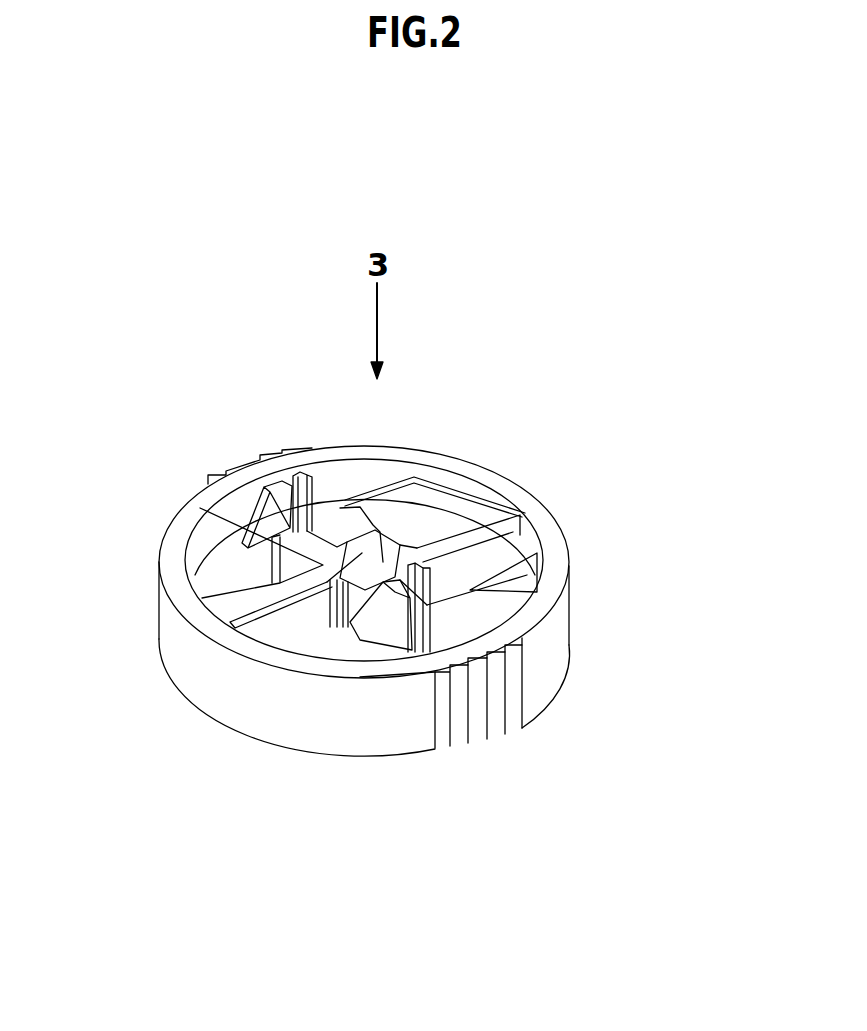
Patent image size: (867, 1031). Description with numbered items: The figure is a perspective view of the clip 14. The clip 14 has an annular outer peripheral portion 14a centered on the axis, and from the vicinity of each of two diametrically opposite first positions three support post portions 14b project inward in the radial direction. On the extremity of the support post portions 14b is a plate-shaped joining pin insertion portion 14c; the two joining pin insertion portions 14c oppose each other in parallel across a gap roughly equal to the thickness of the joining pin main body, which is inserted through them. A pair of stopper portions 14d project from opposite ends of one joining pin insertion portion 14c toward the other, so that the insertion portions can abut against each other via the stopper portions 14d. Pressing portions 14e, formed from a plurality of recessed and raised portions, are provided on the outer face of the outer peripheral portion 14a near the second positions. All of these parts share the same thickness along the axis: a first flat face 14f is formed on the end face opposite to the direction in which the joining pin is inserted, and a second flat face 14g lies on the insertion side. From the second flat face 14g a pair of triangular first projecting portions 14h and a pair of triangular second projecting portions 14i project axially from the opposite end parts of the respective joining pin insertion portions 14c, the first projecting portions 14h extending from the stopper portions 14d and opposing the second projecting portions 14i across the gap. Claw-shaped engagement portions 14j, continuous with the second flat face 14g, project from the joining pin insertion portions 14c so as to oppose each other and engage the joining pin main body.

The clip 14 is at (504, 463).
The outer peripheral portion 14a is at (240, 713).
The support post portions 14b is at (260, 563).
The joining pin insertion portion 14c is at (380, 545).
The stopper portions 14d is at (454, 628).
The pressing portions 14e is at (217, 457).
The first flat face 14f is at (370, 757).
The second flat face 14g is at (560, 562).
The first projecting portions 14h is at (333, 500).
The second projecting portions 14i is at (262, 500).
The engagement portions 14j is at (300, 690).